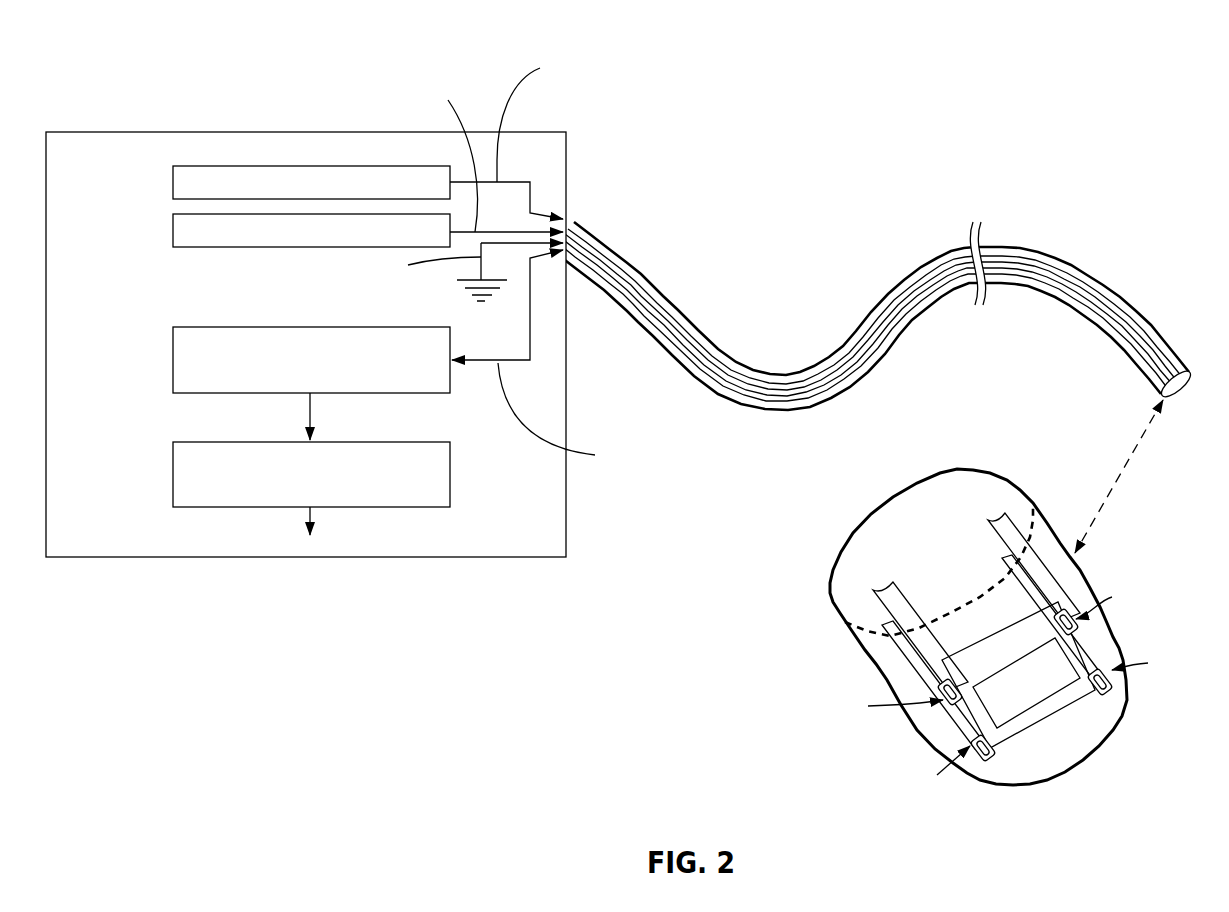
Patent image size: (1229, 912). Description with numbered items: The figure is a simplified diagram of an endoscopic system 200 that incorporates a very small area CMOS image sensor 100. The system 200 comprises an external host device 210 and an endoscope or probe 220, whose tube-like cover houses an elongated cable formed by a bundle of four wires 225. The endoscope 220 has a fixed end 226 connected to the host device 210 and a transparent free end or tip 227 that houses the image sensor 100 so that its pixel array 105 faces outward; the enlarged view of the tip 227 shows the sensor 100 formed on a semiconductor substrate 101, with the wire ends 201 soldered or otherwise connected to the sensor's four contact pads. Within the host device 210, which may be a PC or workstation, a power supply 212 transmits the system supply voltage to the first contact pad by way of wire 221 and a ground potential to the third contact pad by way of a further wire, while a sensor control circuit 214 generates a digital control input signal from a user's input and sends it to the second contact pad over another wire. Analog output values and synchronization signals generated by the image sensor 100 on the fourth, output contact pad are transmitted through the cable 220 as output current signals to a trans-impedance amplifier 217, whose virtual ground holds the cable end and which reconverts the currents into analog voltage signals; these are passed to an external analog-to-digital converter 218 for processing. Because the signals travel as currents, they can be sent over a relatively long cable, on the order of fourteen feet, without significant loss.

The endoscopic system 200 is at (153, 70).
The host device 210 is at (568, 183).
The power supply 212 is at (422, 193).
The sensor control circuit 214 is at (440, 241).
The trans-impedance amplifier 217 is at (397, 383).
The external analog-to-digital (A/D) converter 218 is at (413, 498).
The endoscope (probe) 220 is at (870, 307).
The wire 221 is at (743, 376).
The wires 225 is at (790, 255).
The fixed end 226 is at (572, 219).
The free end (tip) 227 is at (1190, 397).
The CMOS image sensor 100 is at (1184, 385).
The electrode lead 201 is at (1048, 590).
The substrate 101 is at (1025, 740).
The pixel array 105 is at (1050, 708).